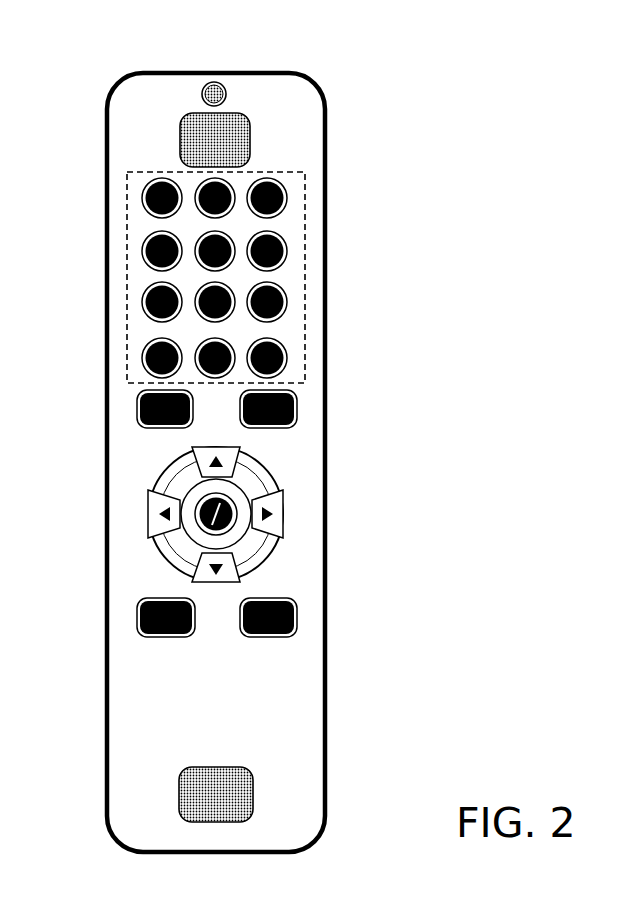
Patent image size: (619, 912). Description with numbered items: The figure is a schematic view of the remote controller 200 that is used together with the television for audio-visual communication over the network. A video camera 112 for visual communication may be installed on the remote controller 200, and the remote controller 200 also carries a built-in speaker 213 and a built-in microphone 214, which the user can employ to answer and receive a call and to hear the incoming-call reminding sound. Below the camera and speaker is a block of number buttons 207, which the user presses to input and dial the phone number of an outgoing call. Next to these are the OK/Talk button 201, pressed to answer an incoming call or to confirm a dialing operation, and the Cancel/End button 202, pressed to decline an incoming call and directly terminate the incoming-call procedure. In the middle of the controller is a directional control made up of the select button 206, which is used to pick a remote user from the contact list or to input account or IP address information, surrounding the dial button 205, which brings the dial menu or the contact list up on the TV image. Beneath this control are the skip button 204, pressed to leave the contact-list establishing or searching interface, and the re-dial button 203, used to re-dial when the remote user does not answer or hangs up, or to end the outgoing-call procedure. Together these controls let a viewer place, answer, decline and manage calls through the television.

The remote controller 200 is at (462, 38).
The video camera 112 is at (217, 82).
The speaker 213 is at (250, 138).
The number buttons 207 is at (305, 277).
The Cancel/End button 202 is at (137, 411).
The OK/Talk button 201 is at (297, 405).
The select button 206 is at (192, 452).
The dial button 205 is at (235, 498).
The skip button 204 is at (137, 617).
The re-dial button 203 is at (297, 617).
The microphone 214 is at (253, 793).